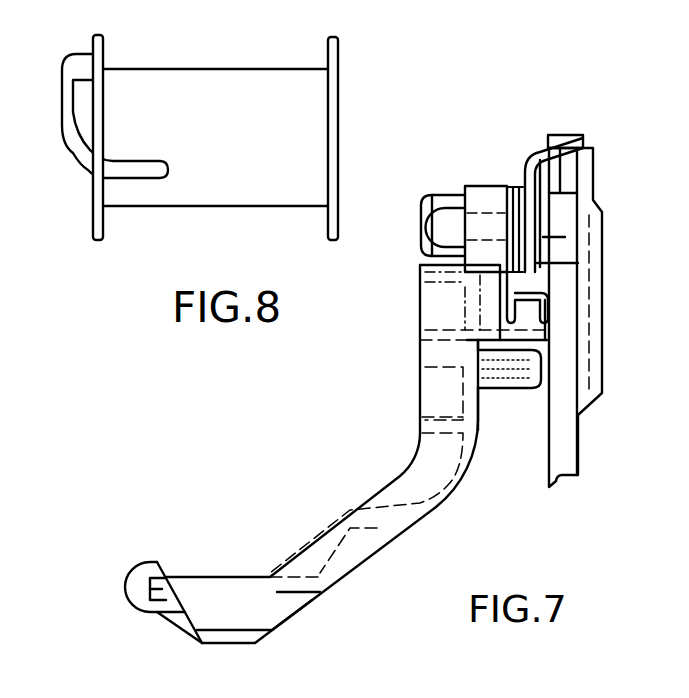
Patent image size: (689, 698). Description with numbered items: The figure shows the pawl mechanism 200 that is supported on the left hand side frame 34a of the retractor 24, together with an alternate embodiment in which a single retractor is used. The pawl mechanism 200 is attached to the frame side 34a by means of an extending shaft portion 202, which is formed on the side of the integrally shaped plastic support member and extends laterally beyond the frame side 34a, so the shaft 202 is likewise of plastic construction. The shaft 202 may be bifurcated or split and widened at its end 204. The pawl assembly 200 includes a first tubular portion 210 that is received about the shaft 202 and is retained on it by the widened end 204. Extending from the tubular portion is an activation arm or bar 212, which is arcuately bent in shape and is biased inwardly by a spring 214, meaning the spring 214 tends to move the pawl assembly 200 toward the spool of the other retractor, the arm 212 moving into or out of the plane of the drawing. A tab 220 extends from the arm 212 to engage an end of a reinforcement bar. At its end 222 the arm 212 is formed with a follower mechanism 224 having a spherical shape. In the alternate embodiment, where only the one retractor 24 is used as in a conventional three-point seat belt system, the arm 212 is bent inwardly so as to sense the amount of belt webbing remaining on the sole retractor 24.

In FIG. 8, the retractor 24 is at (349, 74).
In FIG. 8, the pawl mechanism 200 is at (77, 156).
In FIG. 7, the pawl mechanism 200 is at (382, 462).
In FIG. 7, the extending shaft portion 202 is at (438, 198).
In FIG. 7, the end of shaft 204 is at (492, 183).
In FIG. 7, the first tubular portion 210 is at (483, 192).
In FIG. 7, the activation arm or bar 212 is at (424, 308).
In FIG. 7, the spring 214 is at (530, 160).
In FIG. 7, the tab 220 is at (517, 393).
In FIG. 7, the end of arm 222 is at (158, 560).
In FIG. 7, the follower mechanism 224 is at (157, 614).
In FIG. 7, the left hand side frame 34a is at (562, 176).